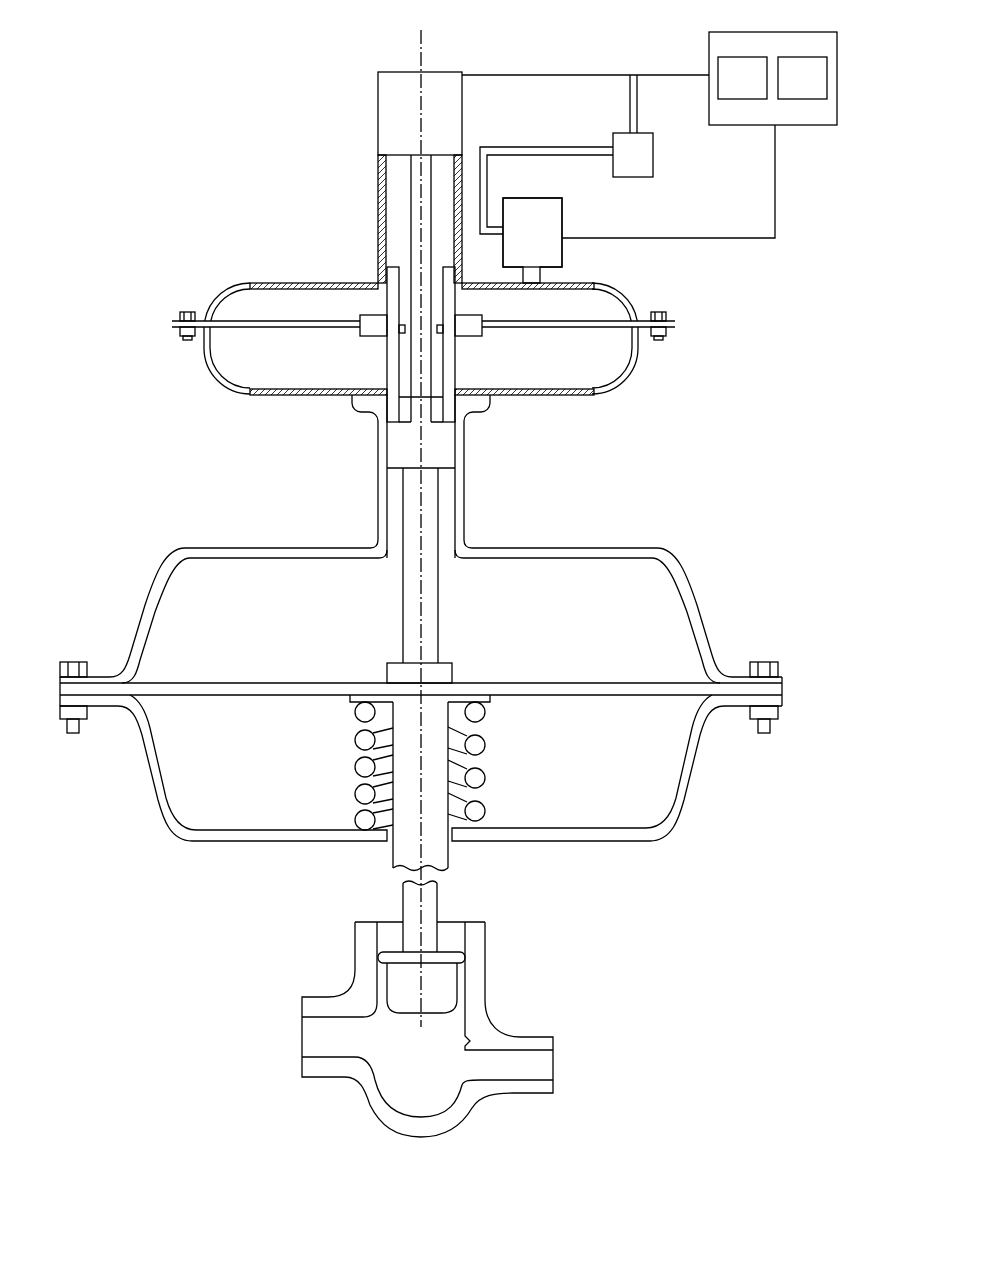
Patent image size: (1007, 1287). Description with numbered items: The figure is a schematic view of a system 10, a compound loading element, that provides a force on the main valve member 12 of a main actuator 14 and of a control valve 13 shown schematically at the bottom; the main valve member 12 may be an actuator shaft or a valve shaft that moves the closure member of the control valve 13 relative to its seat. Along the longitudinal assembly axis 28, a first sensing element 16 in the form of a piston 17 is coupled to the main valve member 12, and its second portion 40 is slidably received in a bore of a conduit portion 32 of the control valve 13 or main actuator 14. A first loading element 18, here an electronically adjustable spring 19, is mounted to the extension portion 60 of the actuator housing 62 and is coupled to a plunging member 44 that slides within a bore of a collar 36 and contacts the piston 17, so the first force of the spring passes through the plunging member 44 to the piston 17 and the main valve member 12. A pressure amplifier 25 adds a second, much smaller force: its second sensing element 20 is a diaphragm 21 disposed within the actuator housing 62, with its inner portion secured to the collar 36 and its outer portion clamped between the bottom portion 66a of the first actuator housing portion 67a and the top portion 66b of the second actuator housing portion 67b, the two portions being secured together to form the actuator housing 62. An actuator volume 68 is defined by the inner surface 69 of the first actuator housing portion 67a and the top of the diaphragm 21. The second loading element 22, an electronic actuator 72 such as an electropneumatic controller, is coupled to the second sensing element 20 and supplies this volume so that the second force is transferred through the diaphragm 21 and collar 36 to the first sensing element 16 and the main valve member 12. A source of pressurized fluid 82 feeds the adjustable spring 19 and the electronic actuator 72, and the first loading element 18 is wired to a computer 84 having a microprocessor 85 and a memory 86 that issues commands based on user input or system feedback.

The system 10 is at (196, 105).
The main valve member 12 is at (442, 688).
The control valve 13 is at (487, 1012).
The main actuator 14 is at (676, 553).
The first sensing element 16 is at (423, 529).
The piston 17 is at (445, 462).
The first loading element 18 is at (422, 166).
The electronically adjustable spring 19 is at (387, 118).
The second sensing element 20 is at (423, 319).
The diaphragm 21 is at (282, 320).
The second loading element 22 is at (562, 218).
The electronic actuator 72 is at (532, 232).
The pressure amplifier 25 is at (669, 339).
The longitudinal assembly axis 28 is at (425, 40).
The conduit portion 32 is at (464, 526).
The collar 36 is at (450, 358).
The second portion 40 is at (400, 452).
The plunging member 44 is at (408, 373).
The extension portion 60 is at (378, 200).
The actuator housing 62 is at (352, 282).
The bottom portion 66a is at (675, 322).
The top portion 66b is at (668, 331).
The first actuator housing portion 67a is at (634, 300).
The second actuator housing portion 67b is at (628, 374).
The actuator volume 68 is at (328, 317).
The inner surface 69 is at (250, 290).
The source of pressurized fluid 82 is at (653, 153).
The computer 84 is at (649, 120).
The microprocessor 85 is at (730, 97).
The memory 86 is at (790, 97).